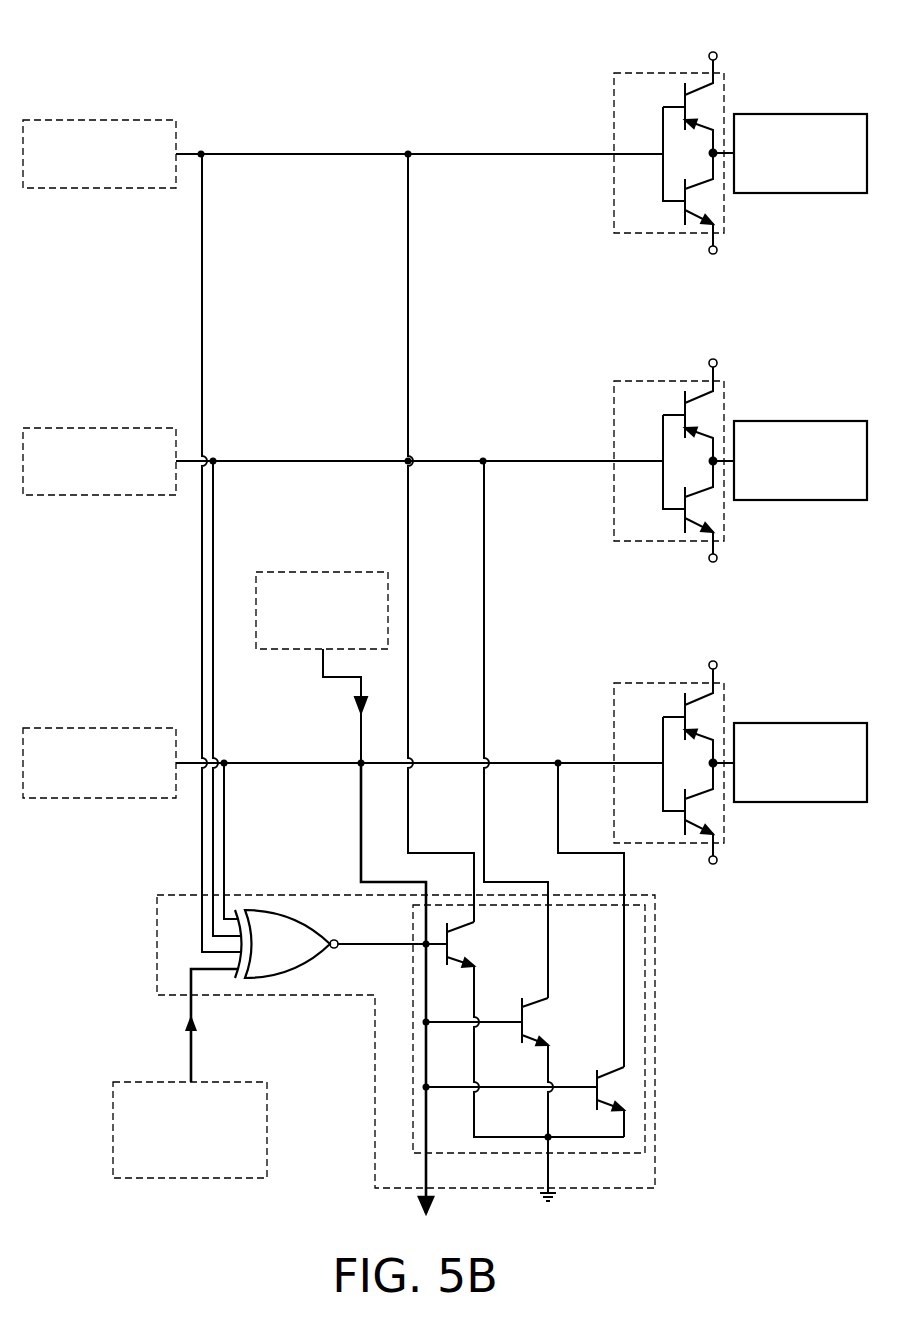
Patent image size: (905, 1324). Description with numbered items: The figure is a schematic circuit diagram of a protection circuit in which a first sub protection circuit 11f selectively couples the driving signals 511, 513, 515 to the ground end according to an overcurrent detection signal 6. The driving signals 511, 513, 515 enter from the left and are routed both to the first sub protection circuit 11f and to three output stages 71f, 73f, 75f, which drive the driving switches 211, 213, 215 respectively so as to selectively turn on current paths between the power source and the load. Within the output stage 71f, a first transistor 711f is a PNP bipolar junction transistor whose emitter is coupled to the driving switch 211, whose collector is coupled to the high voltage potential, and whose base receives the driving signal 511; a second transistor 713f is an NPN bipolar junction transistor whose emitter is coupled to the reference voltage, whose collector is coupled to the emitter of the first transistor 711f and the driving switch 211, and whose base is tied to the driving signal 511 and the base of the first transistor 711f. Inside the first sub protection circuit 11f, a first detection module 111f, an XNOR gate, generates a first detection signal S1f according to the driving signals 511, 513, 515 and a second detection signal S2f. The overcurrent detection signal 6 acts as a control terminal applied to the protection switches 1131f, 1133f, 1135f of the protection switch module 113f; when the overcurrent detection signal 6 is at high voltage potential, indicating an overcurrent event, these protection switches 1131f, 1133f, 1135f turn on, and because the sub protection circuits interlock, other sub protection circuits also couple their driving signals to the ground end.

The driving signal 511 is at (100, 120).
The driving signal 513 is at (100, 428).
The driving signal 515 is at (100, 728).
The overcurrent detection signal 6 is at (322, 572).
The output stage 71f is at (695, 151).
The first transistor 711f is at (713, 107).
The second transistor 713f is at (713, 199).
The driving switch 211 is at (800, 114).
The output stage 73f is at (652, 381).
The driving switch 213 is at (800, 421).
The output stage 75f is at (652, 683).
The driving switch 215 is at (800, 723).
The first sub protection circuit 11f is at (655, 1006).
The first detection module 111f is at (297, 910).
The first detection signal S1f is at (395, 933).
The second detection signal S2f is at (113, 1102).
The protection switch module 113f is at (571, 1029).
The protection switch 1131f is at (472, 943).
The protection switch 1133f is at (555, 1018).
The protection switch 1135f is at (623, 1086).